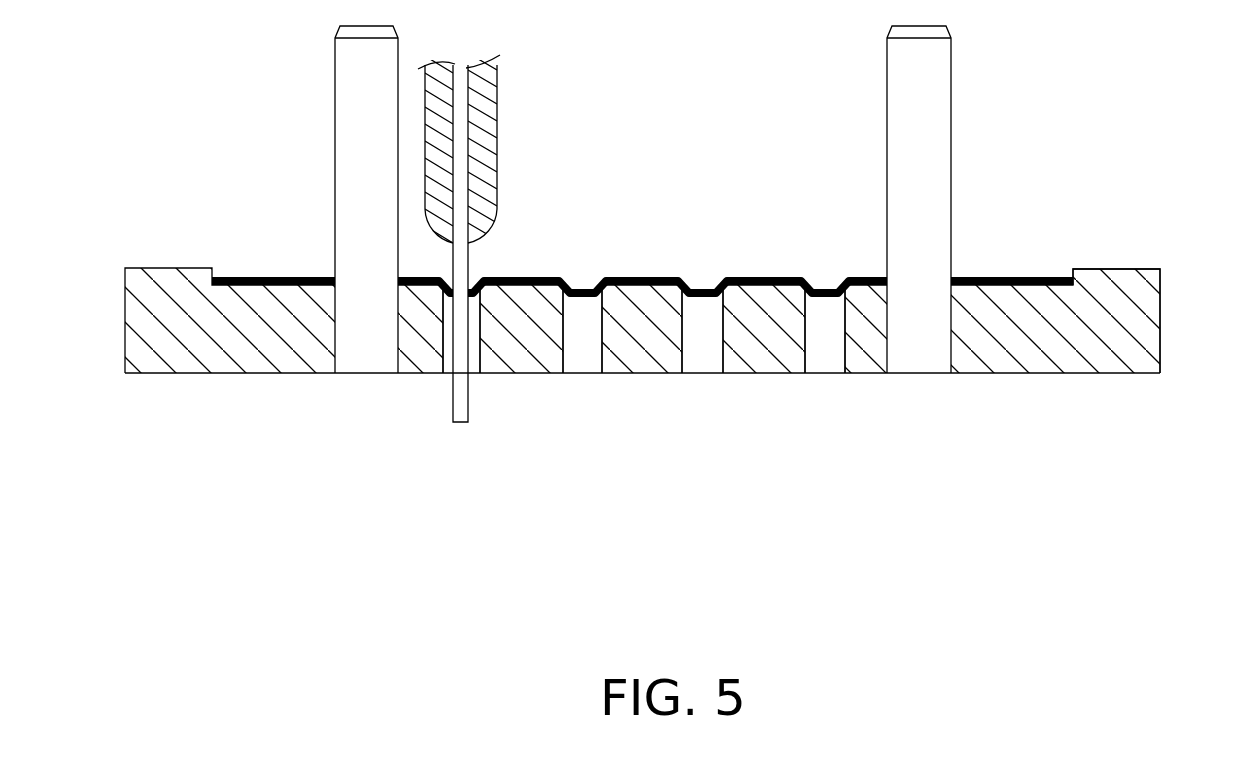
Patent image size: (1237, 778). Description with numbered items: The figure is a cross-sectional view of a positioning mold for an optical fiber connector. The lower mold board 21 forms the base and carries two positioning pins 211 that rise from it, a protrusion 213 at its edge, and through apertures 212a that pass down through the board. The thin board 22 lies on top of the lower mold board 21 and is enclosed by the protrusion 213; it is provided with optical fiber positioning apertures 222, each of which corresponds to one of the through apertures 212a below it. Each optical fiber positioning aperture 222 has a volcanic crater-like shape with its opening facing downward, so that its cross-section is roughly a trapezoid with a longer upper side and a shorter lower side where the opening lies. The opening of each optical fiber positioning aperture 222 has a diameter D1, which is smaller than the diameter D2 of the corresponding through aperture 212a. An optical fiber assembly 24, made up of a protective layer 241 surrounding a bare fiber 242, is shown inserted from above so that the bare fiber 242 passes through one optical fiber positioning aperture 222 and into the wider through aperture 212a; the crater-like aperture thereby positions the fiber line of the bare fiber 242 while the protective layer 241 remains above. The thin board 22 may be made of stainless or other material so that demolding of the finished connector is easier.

The lower mold board 21 is at (1140, 325).
The positioning pin 211 is at (930, 120).
The protrusion 213 is at (1112, 268).
The through aperture 212a is at (475, 360).
The thin board 22 is at (1008, 280).
The optical fiber positioning aperture 222 is at (472, 285).
The optical fiber assembly 24 is at (520, 237).
The protective layer 241 is at (480, 111).
The bare fiber 242 is at (567, 83).
The diameter of optical fiber positioning aperture D1 is at (653, 242).
The diameter of through aperture D2 is at (767, 440).